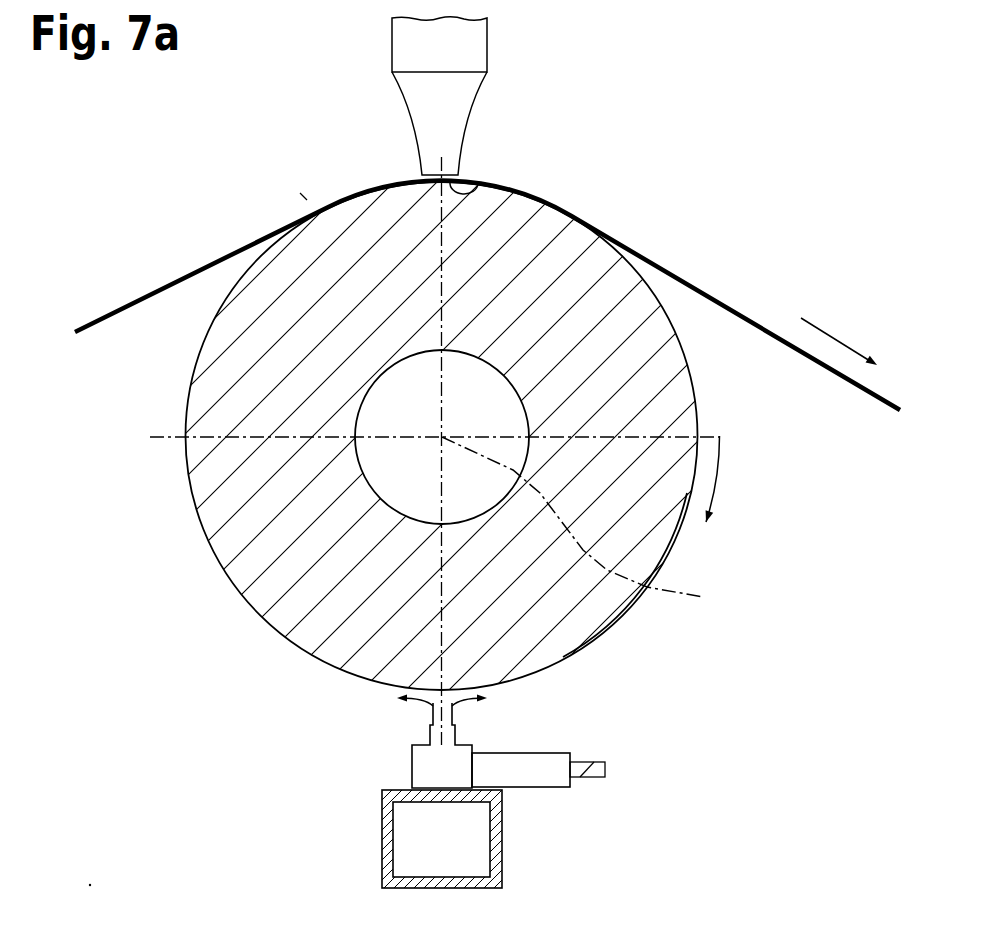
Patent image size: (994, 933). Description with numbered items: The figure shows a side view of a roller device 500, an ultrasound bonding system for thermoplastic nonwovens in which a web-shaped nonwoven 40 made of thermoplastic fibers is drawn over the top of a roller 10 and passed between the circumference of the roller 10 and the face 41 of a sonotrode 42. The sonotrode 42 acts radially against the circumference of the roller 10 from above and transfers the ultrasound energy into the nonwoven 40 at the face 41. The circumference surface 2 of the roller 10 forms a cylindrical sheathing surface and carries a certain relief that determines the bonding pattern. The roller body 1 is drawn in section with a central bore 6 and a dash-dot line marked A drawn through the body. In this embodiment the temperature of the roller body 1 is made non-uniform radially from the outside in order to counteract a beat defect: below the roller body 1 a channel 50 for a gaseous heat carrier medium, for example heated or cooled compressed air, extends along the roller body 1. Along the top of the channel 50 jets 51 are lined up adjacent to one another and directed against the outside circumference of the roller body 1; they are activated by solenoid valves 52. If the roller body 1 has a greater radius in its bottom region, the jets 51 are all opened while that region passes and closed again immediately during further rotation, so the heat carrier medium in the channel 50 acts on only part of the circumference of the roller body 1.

The roller body 1 is at (647, 385).
The circumference surface 2 is at (618, 622).
The central bore 6 is at (455, 520).
The roller 10 is at (178, 413).
The web-shaped nonwoven 40 is at (166, 281).
The face of the sonotrode 41 is at (484, 182).
The sonotrode 42 is at (487, 62).
The channel 50 is at (425, 840).
The jets 51 is at (425, 760).
The solenoid valves 52 is at (527, 770).
The roller device 500 is at (300, 193).
The axis line A is at (591, 528).